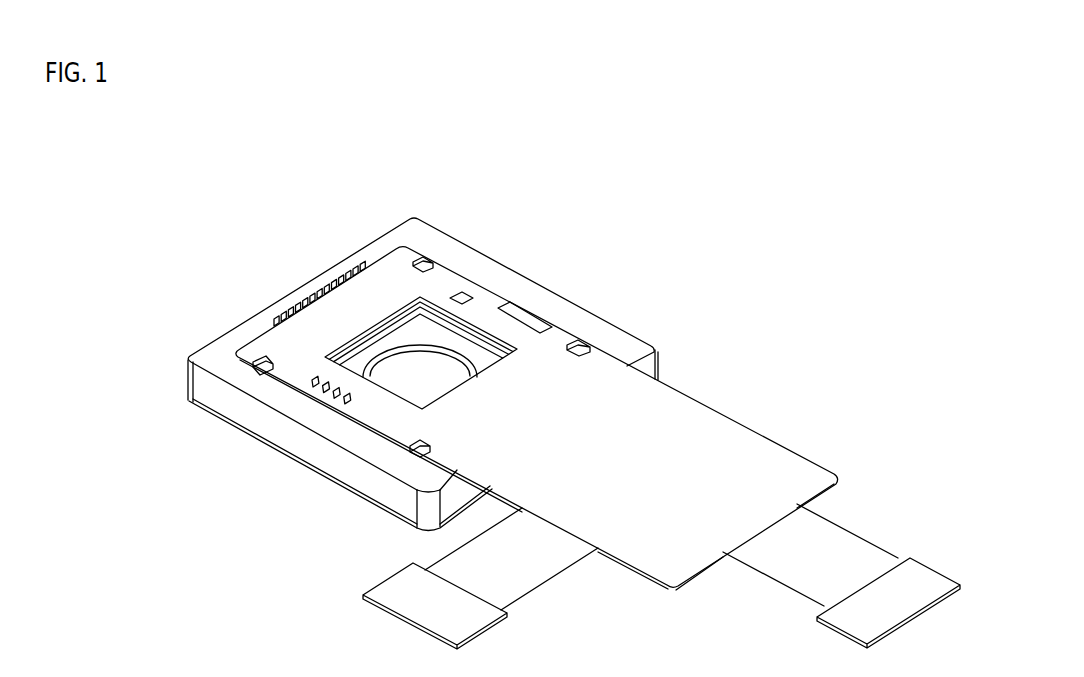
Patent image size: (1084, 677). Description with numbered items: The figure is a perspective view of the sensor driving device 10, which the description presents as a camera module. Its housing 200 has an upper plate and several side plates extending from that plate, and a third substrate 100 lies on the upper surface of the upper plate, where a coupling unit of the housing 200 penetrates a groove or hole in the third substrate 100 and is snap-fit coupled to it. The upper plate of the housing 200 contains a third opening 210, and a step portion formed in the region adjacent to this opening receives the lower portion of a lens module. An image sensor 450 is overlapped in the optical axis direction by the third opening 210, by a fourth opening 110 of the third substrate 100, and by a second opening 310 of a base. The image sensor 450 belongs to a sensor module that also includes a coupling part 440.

The camera module 10 is at (258, 141).
The third substrate 100 is at (827, 467).
The fourth opening 110 is at (456, 317).
The housing 200 is at (262, 427).
The third opening 210 is at (480, 345).
The second opening 310 is at (427, 370).
The coupling part 440 is at (355, 347).
The image sensor 450 is at (403, 343).